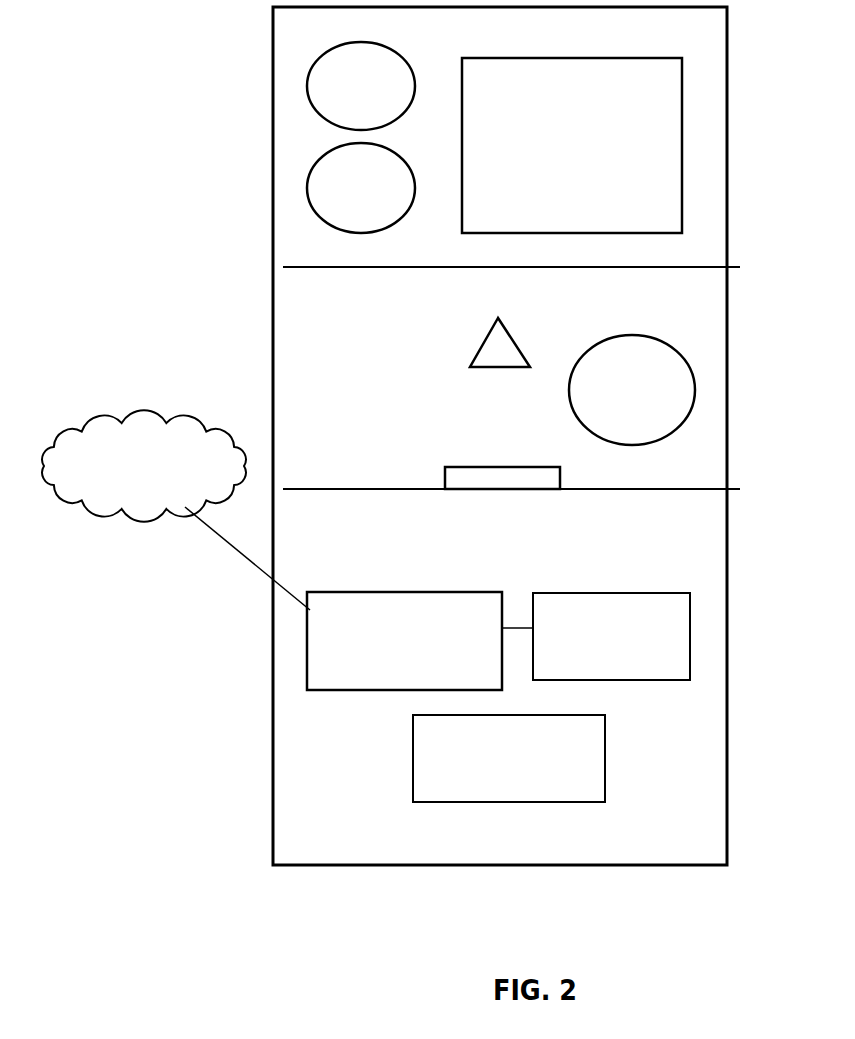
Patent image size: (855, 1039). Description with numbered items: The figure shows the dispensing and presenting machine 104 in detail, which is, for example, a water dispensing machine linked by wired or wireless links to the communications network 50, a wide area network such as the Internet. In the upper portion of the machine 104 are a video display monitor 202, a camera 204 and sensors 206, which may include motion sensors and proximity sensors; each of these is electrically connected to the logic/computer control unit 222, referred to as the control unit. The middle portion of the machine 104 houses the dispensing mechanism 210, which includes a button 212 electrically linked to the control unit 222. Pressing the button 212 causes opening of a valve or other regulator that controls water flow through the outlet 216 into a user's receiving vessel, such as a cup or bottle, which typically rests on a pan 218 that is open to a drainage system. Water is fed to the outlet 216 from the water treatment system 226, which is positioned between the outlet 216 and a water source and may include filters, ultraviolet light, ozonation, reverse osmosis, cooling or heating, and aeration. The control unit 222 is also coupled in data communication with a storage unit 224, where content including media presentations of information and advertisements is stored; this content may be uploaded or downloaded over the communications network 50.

The dispensing and presenting machine 104 is at (266, 62).
The video display monitor 202 is at (572, 145).
The camera 204 is at (361, 86).
The sensors 206 is at (361, 188).
The dispensing mechanism 210 is at (478, 400).
The button 212 is at (632, 390).
The outlet 216 is at (502, 348).
The pan 218 is at (532, 468).
The logic/computer control unit 222 is at (404, 641).
The storage unit 224 is at (611, 636).
The water treatment system 226 is at (509, 758).
The communications network 50 is at (176, 510).